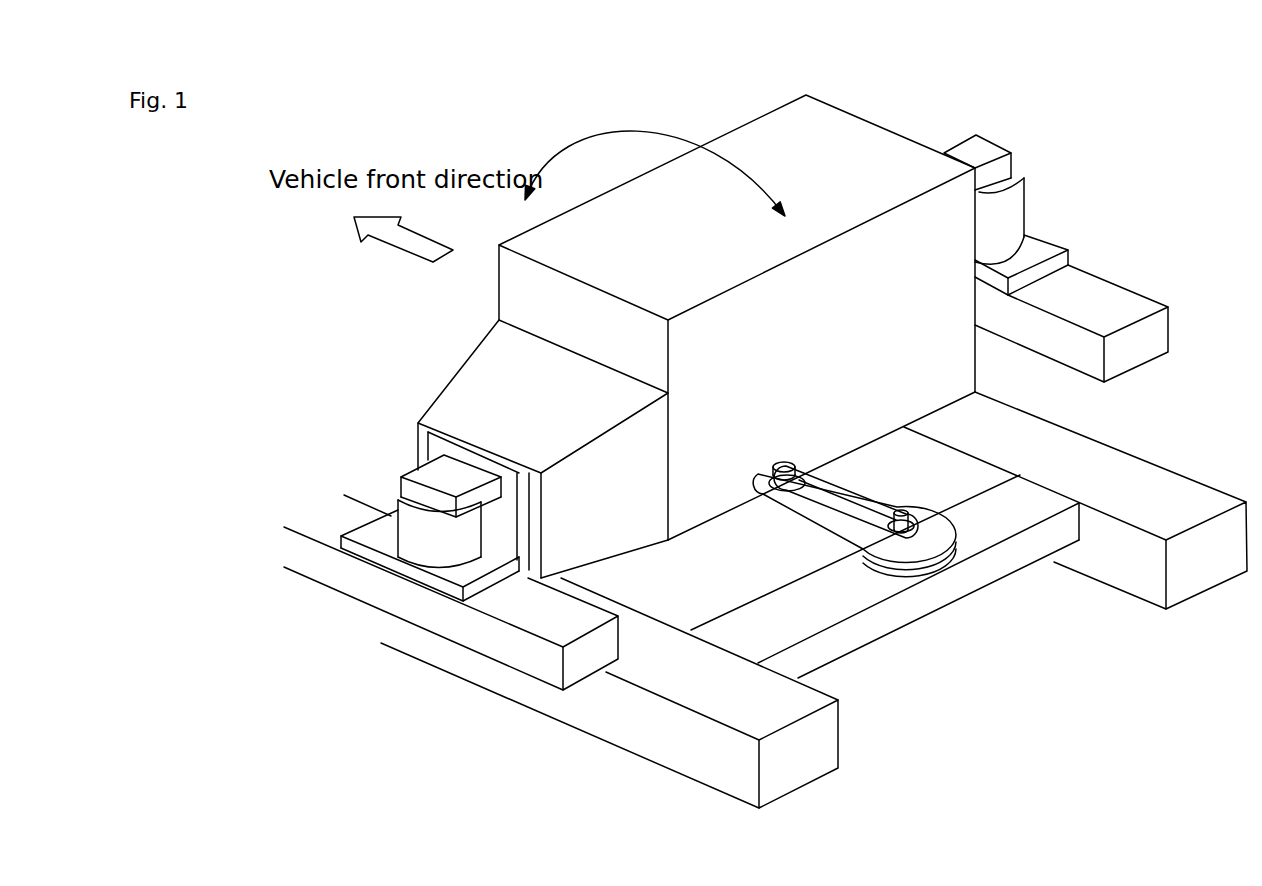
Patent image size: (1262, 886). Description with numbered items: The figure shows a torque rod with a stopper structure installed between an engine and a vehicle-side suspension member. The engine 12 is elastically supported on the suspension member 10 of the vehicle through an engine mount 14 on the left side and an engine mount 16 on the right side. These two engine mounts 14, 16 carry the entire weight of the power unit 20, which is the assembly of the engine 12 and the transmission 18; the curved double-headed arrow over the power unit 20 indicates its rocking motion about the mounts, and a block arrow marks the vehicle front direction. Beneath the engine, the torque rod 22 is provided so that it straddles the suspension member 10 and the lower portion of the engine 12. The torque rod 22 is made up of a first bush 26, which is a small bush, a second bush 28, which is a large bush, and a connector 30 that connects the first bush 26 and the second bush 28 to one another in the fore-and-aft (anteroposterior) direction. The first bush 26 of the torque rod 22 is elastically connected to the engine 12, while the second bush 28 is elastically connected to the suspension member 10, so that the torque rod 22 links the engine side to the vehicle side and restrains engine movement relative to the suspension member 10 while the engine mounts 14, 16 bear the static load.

The suspension member 10 is at (1175, 468).
The engine 12 is at (787, 102).
The engine mount 14 is at (388, 538).
The engine mount 16 is at (1028, 212).
The transmission 18 is at (462, 367).
The power unit 20 is at (683, 117).
The torque rod 22 is at (871, 492).
The first bush 26 is at (783, 462).
The second bush 28 is at (945, 518).
The connector 30 is at (806, 540).